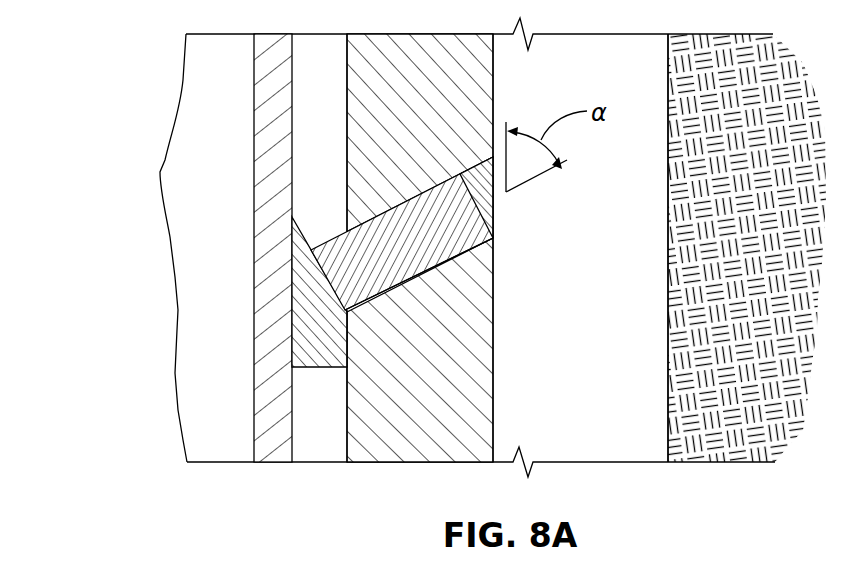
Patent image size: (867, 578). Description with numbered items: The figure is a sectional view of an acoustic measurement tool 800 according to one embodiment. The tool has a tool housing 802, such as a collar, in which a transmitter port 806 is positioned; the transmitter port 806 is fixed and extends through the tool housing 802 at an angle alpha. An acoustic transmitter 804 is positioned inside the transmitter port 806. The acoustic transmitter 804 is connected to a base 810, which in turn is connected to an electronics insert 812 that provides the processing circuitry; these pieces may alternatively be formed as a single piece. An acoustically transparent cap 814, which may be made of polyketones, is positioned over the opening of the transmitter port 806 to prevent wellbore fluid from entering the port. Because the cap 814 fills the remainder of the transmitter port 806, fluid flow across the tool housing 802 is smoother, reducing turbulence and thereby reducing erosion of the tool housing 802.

The acoustic measurement tool 800 is at (124, 212).
The tool housing 802 is at (495, 84).
The acoustic transmitter 804 is at (437, 243).
The transmitter port 806 is at (376, 228).
The base 810 is at (310, 291).
The electronics insert 812 is at (253, 130).
The acoustically transparent cap 814 is at (495, 203).